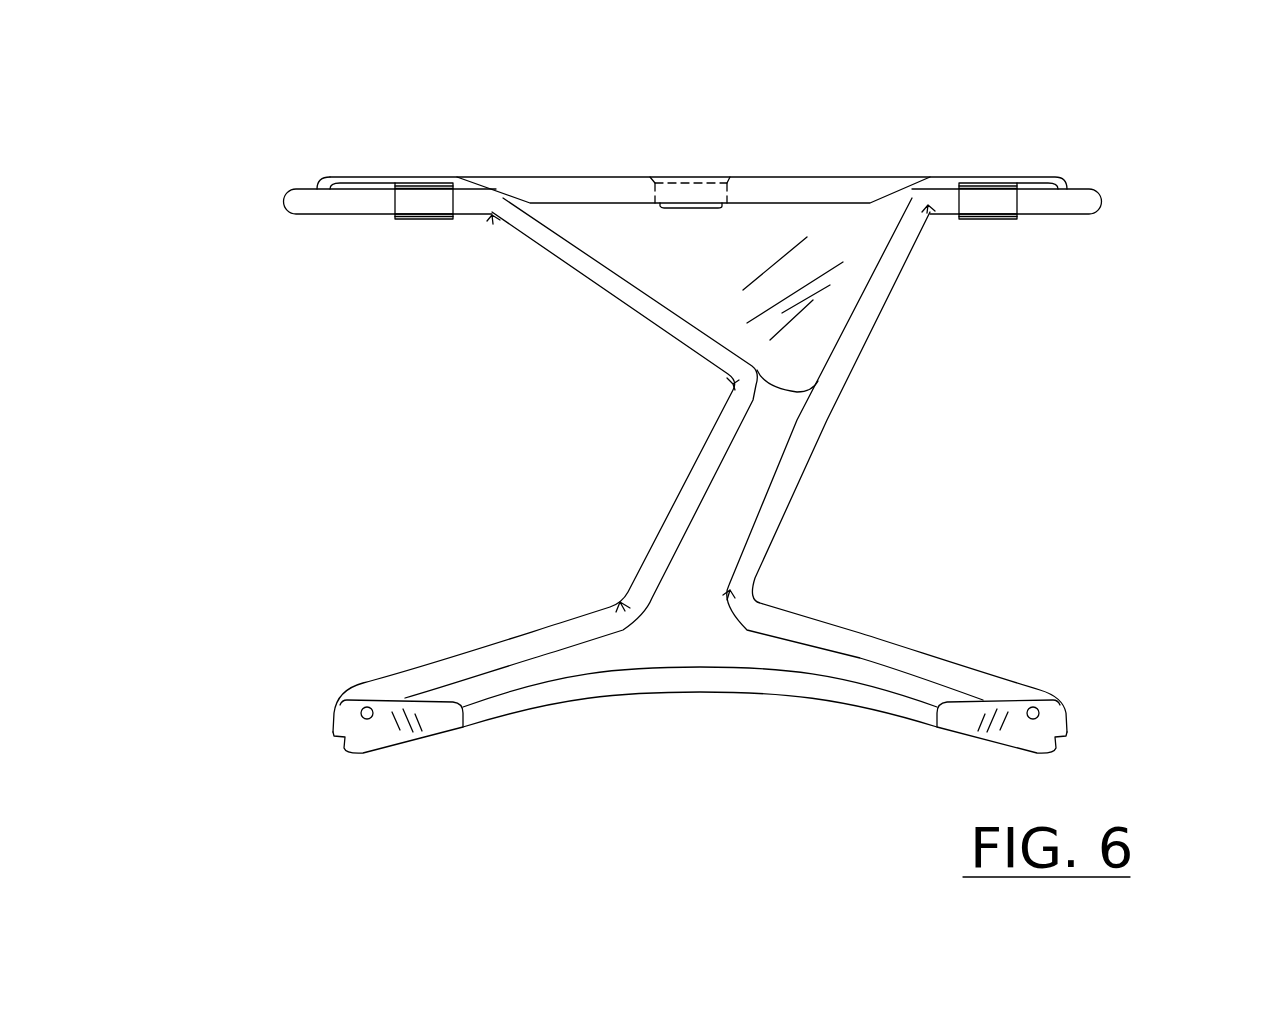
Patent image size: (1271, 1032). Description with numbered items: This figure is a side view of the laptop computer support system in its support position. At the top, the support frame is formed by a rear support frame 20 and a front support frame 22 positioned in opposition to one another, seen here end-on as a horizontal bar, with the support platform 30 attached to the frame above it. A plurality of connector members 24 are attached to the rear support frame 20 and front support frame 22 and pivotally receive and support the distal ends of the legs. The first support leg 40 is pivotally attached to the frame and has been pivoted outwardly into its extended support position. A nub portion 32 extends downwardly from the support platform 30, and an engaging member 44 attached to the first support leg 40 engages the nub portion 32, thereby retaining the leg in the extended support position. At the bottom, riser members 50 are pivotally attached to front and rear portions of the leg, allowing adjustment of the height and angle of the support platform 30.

The rear support frame 20 is at (1080, 202).
The front support frame 22 is at (322, 200).
The connector member 24 is at (420, 200).
The support platform 30 is at (538, 185).
The nub portion 32 is at (703, 183).
The first support leg 40 is at (673, 527).
The engaging member 44 is at (687, 207).
The riser member 50 is at (357, 740).